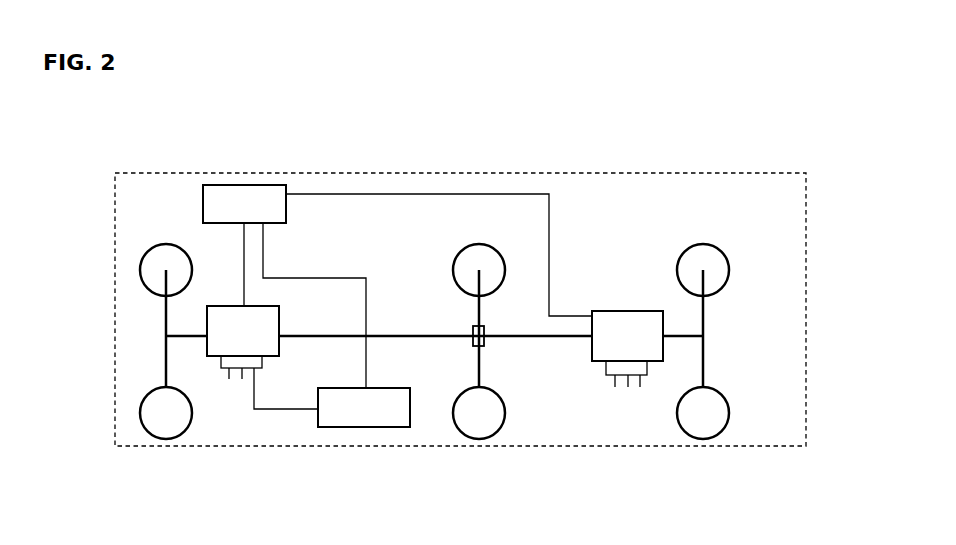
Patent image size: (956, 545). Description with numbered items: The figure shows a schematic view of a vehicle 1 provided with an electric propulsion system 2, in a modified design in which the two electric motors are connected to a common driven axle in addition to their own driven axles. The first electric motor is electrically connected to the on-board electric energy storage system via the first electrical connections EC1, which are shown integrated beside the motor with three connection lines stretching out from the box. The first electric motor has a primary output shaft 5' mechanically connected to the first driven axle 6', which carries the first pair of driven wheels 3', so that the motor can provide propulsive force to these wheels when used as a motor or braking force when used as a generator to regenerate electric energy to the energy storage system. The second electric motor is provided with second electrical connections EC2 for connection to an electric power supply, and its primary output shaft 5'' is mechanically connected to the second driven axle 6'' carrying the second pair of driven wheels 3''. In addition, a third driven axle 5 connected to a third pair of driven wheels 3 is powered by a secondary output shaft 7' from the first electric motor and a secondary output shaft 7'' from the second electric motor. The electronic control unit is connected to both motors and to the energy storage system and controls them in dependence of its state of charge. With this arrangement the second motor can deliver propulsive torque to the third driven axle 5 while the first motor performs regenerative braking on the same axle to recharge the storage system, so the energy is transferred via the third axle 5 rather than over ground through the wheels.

The vehicle 1 is at (533, 136).
The electric propulsion system 2 is at (255, 447).
The first pair of driven wheels 3' is at (166, 320).
The third pair of driven wheels 3 is at (479, 321).
The second pair of driven wheels 3'' is at (721, 337).
The primary output shaft of the first Electric Motor 5' is at (147, 329).
The third driven axle 5 is at (454, 299).
The primary output shaft of the second Electric Motor 5'' is at (721, 329).
The first driven axle 6' is at (233, 309).
The second driven axle 6'' is at (637, 318).
The secondary output shaft from EM1 7' is at (379, 299).
The secondary output shaft from EM2 7'' is at (535, 299).
The first Electrical Connections EC1 is at (222, 367).
The second Electrical Connections EC2 is at (647, 374).